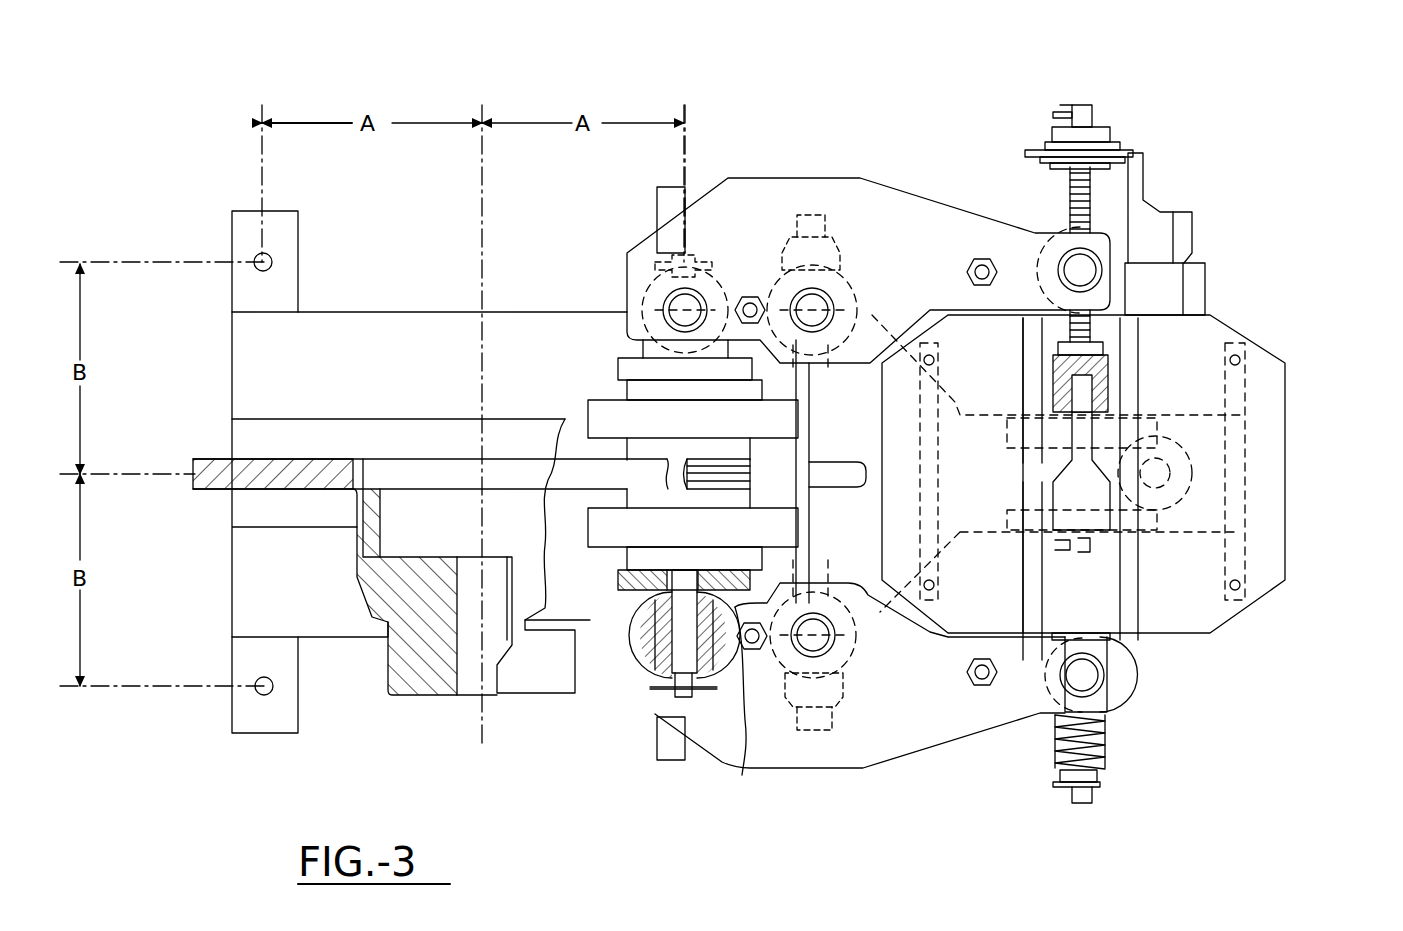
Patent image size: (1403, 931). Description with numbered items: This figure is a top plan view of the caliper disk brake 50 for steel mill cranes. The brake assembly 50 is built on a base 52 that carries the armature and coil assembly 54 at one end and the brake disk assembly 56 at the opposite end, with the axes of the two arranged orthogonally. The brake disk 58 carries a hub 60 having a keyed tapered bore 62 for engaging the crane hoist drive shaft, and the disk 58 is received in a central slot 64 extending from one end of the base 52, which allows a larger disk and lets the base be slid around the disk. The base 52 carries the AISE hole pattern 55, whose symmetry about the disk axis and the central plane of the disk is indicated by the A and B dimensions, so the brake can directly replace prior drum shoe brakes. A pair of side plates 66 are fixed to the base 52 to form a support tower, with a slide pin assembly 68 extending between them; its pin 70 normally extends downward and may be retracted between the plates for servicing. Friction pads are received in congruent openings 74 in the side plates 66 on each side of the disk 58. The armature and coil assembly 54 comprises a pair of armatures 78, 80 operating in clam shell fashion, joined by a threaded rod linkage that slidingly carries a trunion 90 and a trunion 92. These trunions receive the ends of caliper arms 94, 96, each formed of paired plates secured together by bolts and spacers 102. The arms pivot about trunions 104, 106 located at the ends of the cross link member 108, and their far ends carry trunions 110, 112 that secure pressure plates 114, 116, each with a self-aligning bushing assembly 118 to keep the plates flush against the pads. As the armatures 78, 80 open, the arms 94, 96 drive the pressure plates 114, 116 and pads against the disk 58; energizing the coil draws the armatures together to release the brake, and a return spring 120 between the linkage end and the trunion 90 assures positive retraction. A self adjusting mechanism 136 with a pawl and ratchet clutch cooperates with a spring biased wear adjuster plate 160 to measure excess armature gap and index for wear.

The caliper disk brake 50 is at (690, 72).
The base 52 is at (240, 612).
The armature and coil assembly 54 is at (1275, 248).
The AISE hole pattern 55 is at (258, 268).
The brake disk assembly 56 is at (448, 372).
The brake disk 58 is at (200, 462).
The hub 60 is at (405, 700).
The keyed tapered bore 62 is at (472, 695).
The central slot 64 is at (235, 433).
The side plates 66 is at (595, 406).
The slide pin assembly 68 is at (770, 470).
The pin 70 is at (838, 490).
The openings 74 is at (625, 378).
The armature 78 is at (1205, 615).
The armature 80 is at (1205, 335).
The trunion 90 is at (1122, 690).
The trunion 92 is at (1058, 232).
The caliper arm 94 is at (892, 740).
The caliper arm 96 is at (812, 200).
The bolts and spacers 102 is at (745, 300).
The trunion 104 is at (766, 768).
The trunion 106 is at (909, 245).
The cross link member 108 is at (846, 626).
The trunion 110 is at (642, 648).
The trunion 112 is at (655, 292).
The pressure plate 114 is at (625, 586).
The pressure plate 116 is at (640, 358).
The self-aligning bushing assembly 118 is at (678, 690).
The return spring 120 is at (1107, 753).
The self adjusting mechanism 136 is at (1112, 125).
The wear adjuster plate 160 is at (1170, 215).